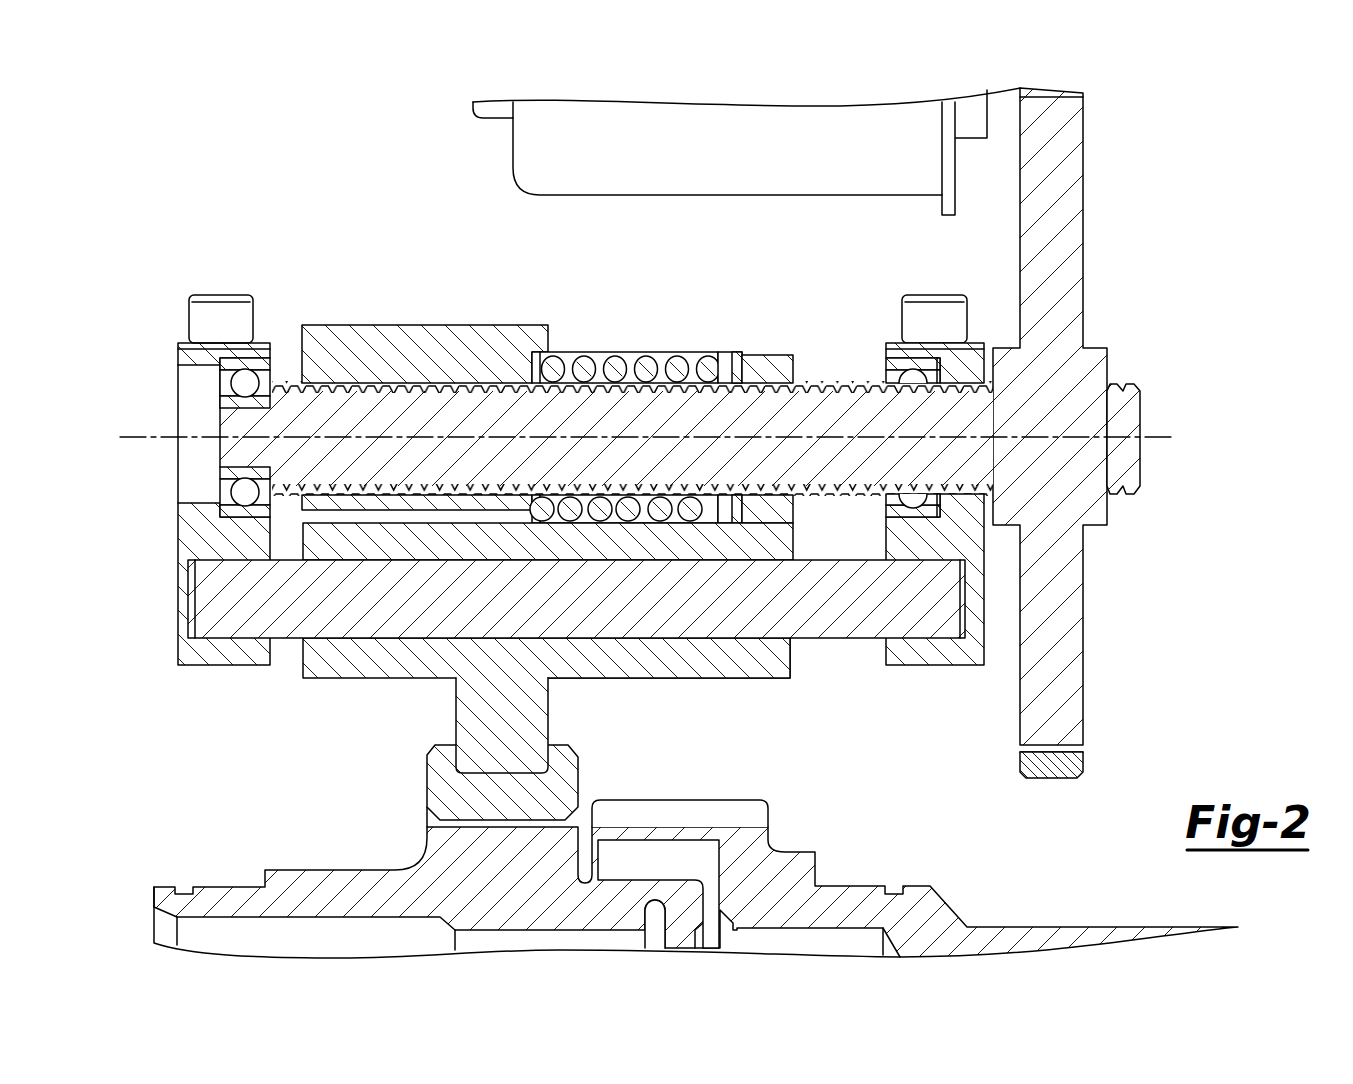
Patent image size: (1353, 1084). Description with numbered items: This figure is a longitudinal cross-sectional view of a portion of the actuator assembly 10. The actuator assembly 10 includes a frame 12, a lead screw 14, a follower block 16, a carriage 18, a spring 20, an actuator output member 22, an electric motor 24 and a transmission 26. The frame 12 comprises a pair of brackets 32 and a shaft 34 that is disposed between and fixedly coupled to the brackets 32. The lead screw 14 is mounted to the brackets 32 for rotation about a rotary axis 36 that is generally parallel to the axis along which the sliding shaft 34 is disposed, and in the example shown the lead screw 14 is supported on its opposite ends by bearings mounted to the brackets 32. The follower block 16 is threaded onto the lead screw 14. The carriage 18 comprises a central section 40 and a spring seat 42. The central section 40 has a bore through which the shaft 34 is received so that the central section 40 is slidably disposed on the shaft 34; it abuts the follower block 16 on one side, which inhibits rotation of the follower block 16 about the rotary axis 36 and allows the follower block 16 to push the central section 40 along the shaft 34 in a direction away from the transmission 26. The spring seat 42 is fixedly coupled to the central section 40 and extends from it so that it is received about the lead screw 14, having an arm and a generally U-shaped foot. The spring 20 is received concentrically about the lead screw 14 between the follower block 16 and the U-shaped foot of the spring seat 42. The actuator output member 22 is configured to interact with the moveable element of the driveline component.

The actuator assembly 10 is at (362, 192).
The frame 12 is at (198, 402).
The lead screw 14 is at (843, 413).
The follower block 16 is at (393, 355).
The carriage 18 is at (330, 656).
The spring 20 is at (648, 360).
The actuator output member 22 is at (487, 700).
The electric motor 24 is at (690, 145).
The transmission 26 is at (1086, 270).
The brackets 32 is at (210, 535).
The shaft 34 is at (735, 616).
The rotary axis 36 is at (1172, 430).
The central section 40 is at (615, 656).
The spring seat 42 is at (765, 520).